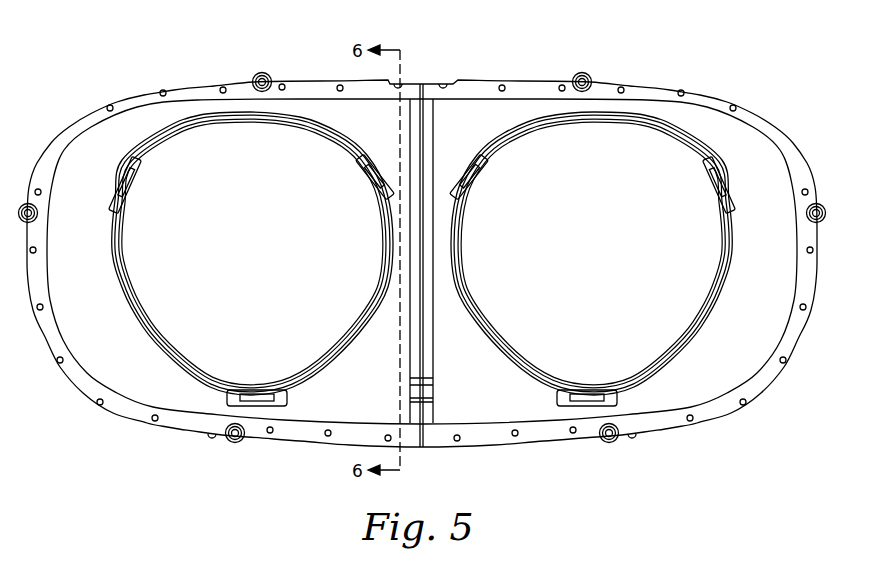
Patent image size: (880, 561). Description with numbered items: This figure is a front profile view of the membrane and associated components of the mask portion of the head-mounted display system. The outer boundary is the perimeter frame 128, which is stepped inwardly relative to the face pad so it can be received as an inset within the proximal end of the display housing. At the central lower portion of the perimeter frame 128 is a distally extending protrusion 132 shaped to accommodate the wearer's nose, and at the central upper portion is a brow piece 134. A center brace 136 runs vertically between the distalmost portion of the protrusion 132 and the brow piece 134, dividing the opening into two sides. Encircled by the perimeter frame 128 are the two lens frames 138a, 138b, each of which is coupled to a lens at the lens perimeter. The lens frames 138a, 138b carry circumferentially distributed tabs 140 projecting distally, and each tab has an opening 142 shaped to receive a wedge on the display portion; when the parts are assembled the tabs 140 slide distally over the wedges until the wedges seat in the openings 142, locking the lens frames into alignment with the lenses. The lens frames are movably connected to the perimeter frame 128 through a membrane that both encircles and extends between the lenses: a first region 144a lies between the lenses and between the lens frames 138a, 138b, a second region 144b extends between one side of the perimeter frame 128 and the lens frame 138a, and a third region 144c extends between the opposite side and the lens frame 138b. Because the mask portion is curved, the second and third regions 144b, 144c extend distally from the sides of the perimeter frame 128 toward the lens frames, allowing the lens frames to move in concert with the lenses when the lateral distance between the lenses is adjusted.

The perimeter frame 128 is at (72, 347).
The protrusion 132 is at (442, 437).
The brow piece 134 is at (472, 90).
The center brace 136 is at (428, 157).
The lens frame 138a is at (460, 258).
The lens frame 138b is at (122, 250).
The tab 140 is at (683, 153).
The opening 142 is at (707, 190).
The first region 144a is at (480, 355).
The second region 144b is at (786, 239).
The third region 144c is at (101, 232).